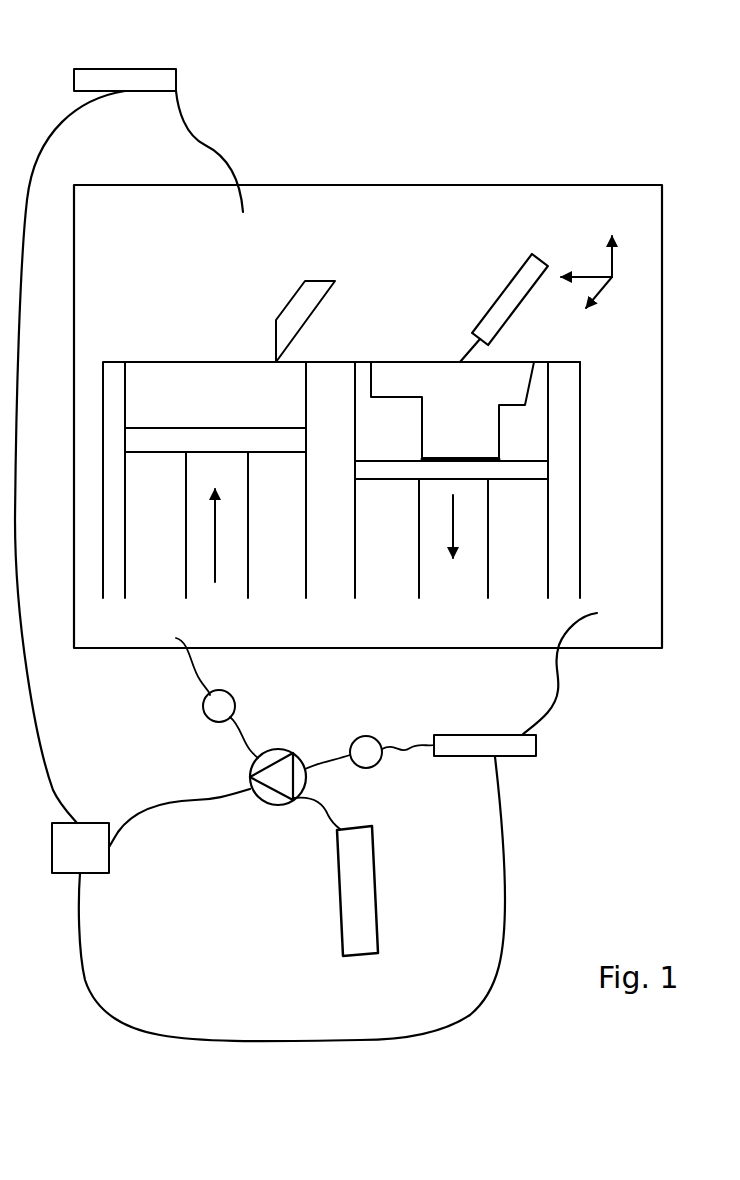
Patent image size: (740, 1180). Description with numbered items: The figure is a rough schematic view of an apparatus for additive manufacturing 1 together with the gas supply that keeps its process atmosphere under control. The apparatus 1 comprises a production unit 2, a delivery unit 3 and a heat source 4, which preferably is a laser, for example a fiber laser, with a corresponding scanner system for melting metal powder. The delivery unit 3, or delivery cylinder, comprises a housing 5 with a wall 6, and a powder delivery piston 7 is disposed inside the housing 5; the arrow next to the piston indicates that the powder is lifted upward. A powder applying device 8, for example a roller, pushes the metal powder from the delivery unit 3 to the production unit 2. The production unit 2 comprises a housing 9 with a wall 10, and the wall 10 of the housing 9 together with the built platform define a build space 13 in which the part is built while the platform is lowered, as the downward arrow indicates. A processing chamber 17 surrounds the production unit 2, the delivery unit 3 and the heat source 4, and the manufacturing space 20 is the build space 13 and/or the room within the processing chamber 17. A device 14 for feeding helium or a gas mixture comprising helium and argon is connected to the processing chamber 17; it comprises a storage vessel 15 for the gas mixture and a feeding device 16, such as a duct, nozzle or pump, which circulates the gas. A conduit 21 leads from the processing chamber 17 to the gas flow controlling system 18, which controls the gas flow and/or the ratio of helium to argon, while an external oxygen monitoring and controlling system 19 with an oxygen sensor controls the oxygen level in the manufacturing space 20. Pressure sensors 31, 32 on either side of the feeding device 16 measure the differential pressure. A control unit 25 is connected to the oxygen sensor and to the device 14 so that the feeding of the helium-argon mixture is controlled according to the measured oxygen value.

The apparatus for additive manufacturing 1 is at (325, 84).
The production unit 2 is at (398, 603).
The delivery unit 3 is at (185, 595).
The heat source 4 is at (545, 268).
The housing 5 is at (307, 387).
The wall 6 is at (115, 372).
The powder delivery piston 7 is at (237, 486).
The powder applying device 8 is at (318, 288).
The housing 9 is at (581, 410).
The wall 10 is at (337, 572).
The build space 13 is at (471, 416).
The device for feeding a gas mixture comprising Helium and Argon 14 is at (173, 903).
The storage vessel 15 is at (372, 872).
The feeding device 16 is at (258, 800).
The processing chamber 17 is at (362, 200).
The gas flow controlling system 18 is at (536, 746).
The oxygen monitoring and controlling system 19 is at (143, 66).
The manufacturing space 20 is at (432, 287).
The conduit 21 is at (560, 688).
The control unit 25 is at (90, 859).
The pressure sensor 31 is at (368, 737).
The pressure sensor 32 is at (225, 700).